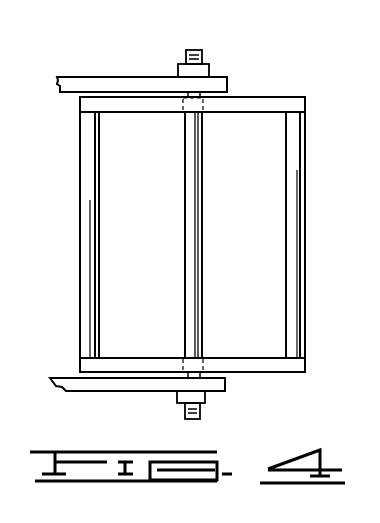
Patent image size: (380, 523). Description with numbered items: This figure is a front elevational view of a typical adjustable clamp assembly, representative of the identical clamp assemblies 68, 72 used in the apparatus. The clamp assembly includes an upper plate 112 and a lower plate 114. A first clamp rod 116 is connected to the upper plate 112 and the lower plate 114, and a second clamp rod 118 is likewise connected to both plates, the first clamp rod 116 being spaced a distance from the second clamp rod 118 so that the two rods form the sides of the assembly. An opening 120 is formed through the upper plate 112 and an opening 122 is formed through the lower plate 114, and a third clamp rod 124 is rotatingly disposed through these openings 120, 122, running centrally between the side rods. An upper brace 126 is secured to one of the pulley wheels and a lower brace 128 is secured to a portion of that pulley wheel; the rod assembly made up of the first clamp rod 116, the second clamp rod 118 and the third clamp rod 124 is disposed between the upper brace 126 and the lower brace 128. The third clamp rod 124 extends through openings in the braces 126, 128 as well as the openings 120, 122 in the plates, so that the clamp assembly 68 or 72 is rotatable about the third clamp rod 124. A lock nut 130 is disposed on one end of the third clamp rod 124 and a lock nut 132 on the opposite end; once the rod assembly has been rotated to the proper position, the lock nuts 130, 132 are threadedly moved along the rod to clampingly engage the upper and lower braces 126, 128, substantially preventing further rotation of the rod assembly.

The first adjustable clamp assembly 68 is at (186, 229).
The third adjustable clamp assembly 72 is at (186, 229).
The upper plate 112 is at (290, 101).
The lower plate 114 is at (283, 370).
The first clamp rod 116 is at (87, 190).
The second clamp rod 118 is at (300, 190).
The opening 120 is at (203, 113).
The opening 122 is at (203, 372).
The third clamp rod 124 is at (194, 240).
The upper brace 126 is at (125, 85).
The lower brace 128 is at (113, 385).
The lock nut 130 is at (207, 63).
The lock nut 132 is at (205, 405).